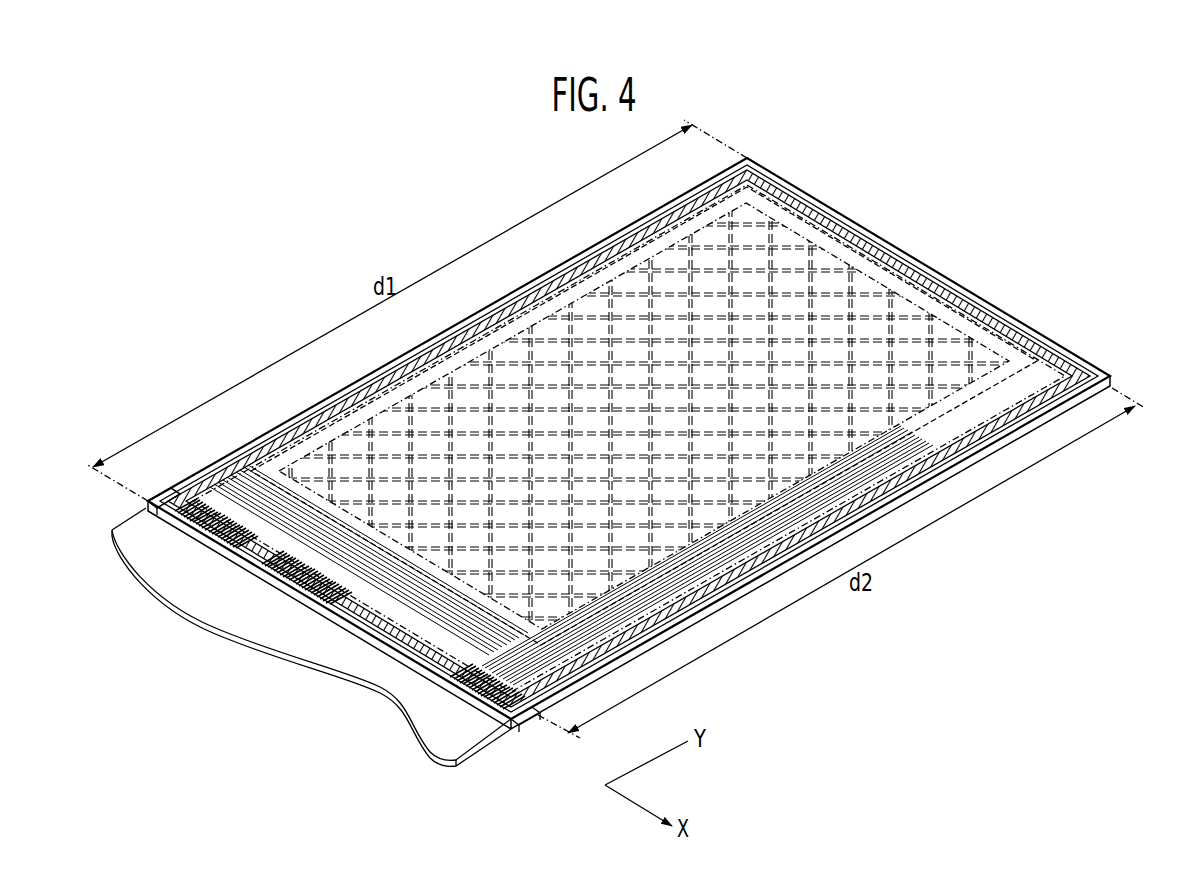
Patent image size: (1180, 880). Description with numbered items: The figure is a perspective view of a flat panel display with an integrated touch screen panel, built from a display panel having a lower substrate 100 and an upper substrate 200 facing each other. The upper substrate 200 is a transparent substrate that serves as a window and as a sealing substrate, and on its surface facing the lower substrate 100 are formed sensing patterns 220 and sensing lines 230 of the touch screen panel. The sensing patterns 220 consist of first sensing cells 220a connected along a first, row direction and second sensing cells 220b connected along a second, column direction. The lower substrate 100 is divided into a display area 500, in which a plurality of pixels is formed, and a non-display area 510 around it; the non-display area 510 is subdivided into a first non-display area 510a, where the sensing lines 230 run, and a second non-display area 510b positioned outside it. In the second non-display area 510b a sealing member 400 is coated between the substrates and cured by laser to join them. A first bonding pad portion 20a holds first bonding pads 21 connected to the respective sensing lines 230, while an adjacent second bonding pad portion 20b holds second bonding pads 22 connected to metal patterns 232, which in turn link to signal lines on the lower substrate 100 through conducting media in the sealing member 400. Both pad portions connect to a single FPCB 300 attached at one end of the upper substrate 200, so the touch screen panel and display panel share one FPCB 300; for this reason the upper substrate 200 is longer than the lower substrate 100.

The lower substrate 100 is at (930, 500).
The upper substrate 200 is at (977, 468).
The sensing patterns 220 is at (645, 391).
The first sensing cells 220a is at (870, 283).
The second sensing cells 220b is at (830, 282).
The sensing lines 230 is at (697, 215).
The metal patterns 232 is at (523, 700).
The FPCB 300 is at (130, 523).
The sealing member 400 is at (743, 590).
The display area 500 is at (855, 490).
The non-display area 510 is at (671, 438).
The first non-display area 510a is at (1045, 388).
The second non-display area 510b is at (1030, 419).
The first bonding pad portion 20a is at (170, 508).
The second bonding pad portion 20b is at (517, 718).
The first bonding pads 21 is at (187, 547).
The second bonding pads 22 is at (470, 687).